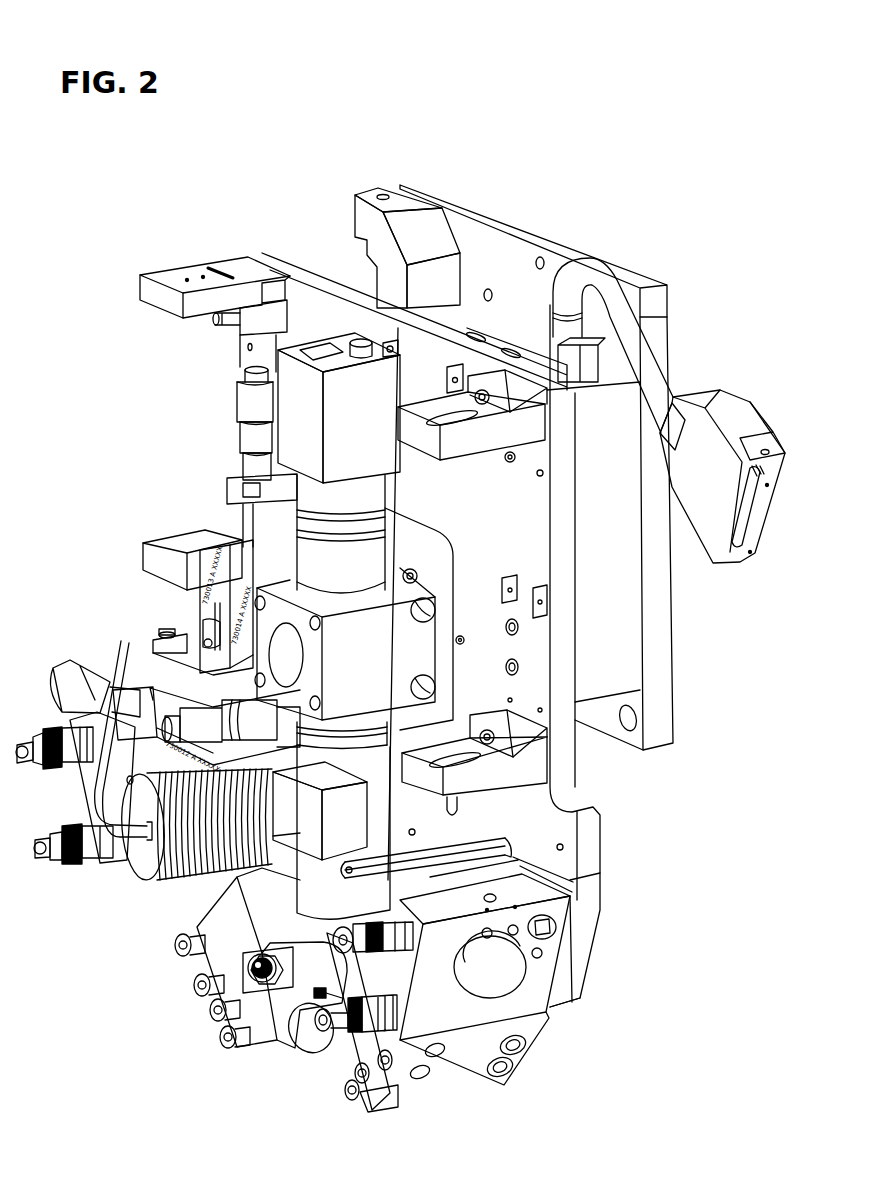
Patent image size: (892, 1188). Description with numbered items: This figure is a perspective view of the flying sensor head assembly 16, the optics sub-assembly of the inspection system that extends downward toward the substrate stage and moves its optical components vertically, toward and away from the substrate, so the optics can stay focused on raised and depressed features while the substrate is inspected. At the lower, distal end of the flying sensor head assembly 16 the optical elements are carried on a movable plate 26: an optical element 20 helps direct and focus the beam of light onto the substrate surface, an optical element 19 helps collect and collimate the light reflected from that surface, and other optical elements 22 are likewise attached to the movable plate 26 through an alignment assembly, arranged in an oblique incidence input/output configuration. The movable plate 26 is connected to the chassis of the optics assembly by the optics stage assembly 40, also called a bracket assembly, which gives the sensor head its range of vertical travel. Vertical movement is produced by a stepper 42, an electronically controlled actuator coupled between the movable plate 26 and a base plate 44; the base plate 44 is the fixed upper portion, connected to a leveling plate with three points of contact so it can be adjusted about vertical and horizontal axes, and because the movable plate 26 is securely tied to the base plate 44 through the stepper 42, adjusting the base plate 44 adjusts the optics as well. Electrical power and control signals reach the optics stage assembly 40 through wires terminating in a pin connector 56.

The flying sensor head assembly 16 is at (101, 248).
The optical element 19 is at (442, 1023).
The optical element 20 is at (288, 1050).
The other optical elements 22 is at (372, 429).
The movable plate 26 is at (265, 262).
The optics stage assembly 40 is at (359, 184).
The stepper 42 is at (617, 556).
The base plate 44 is at (417, 182).
The pin connector 56 is at (680, 372).